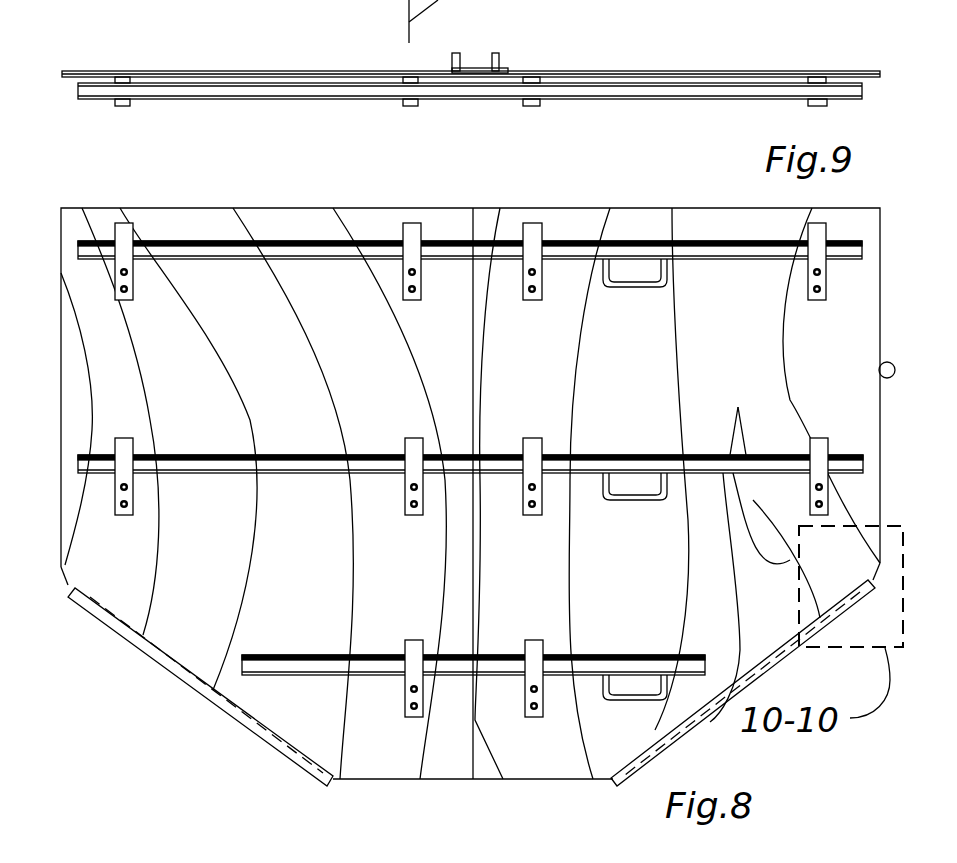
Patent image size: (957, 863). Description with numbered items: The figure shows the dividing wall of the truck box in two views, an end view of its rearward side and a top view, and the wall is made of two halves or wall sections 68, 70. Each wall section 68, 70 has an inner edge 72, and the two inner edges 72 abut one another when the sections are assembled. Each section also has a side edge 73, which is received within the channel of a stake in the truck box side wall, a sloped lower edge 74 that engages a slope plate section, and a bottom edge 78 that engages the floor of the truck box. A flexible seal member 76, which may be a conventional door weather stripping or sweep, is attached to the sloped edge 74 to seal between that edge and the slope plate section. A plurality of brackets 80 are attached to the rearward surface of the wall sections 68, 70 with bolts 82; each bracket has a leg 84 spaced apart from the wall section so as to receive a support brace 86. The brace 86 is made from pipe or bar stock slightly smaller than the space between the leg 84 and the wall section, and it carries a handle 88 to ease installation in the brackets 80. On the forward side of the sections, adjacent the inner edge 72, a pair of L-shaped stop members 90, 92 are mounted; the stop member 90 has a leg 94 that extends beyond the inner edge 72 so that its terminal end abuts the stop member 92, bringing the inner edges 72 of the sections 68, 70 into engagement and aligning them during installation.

In FIG. 9, the wall section 68 is at (270, 71).
In FIG. 8, the wall section 68 is at (302, 425).
In FIG. 9, the wall section 70 is at (730, 71).
In FIG. 8, the wall section 70 is at (644, 415).
In FIG. 9, the inner edge 72 is at (425, 71).
In FIG. 8, the inner edge 72 is at (477, 230).
In FIG. 9, the side edge 73 is at (62, 74).
In FIG. 8, the side edge 73 is at (61, 230).
In FIG. 8, the sloped lower edge 74 is at (157, 658).
In FIG. 8, the flexible seal member 76 is at (227, 713).
In FIG. 8, the bottom edge 78 is at (390, 779).
In FIG. 9, the bracket 80 is at (118, 108).
In FIG. 8, the bracket 80 is at (405, 300).
In FIG. 8, the bolt 82 is at (410, 289).
In FIG. 8, the leg 84 is at (530, 225).
In FIG. 9, the support brace 86 is at (225, 92).
In FIG. 8, the support brace 86 is at (345, 243).
In FIG. 8, the handle 88 is at (613, 290).
In FIG. 9, the L-shaped stop member 90 is at (458, 70).
In FIG. 9, the L-shaped stop member 92 is at (507, 80).
In FIG. 9, the leg 94 is at (477, 70).